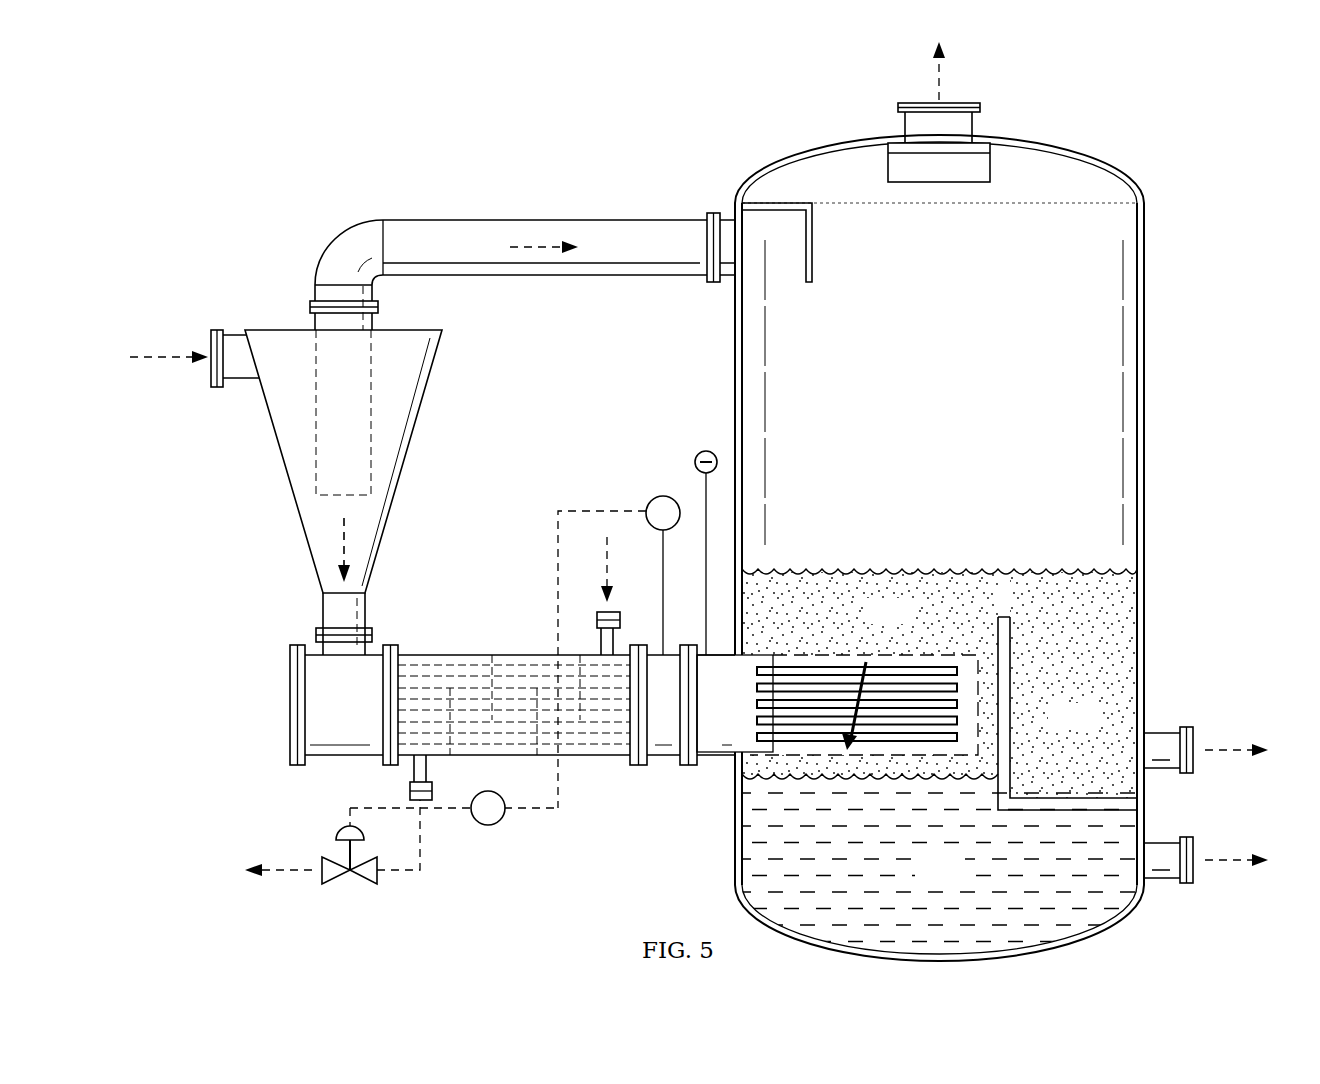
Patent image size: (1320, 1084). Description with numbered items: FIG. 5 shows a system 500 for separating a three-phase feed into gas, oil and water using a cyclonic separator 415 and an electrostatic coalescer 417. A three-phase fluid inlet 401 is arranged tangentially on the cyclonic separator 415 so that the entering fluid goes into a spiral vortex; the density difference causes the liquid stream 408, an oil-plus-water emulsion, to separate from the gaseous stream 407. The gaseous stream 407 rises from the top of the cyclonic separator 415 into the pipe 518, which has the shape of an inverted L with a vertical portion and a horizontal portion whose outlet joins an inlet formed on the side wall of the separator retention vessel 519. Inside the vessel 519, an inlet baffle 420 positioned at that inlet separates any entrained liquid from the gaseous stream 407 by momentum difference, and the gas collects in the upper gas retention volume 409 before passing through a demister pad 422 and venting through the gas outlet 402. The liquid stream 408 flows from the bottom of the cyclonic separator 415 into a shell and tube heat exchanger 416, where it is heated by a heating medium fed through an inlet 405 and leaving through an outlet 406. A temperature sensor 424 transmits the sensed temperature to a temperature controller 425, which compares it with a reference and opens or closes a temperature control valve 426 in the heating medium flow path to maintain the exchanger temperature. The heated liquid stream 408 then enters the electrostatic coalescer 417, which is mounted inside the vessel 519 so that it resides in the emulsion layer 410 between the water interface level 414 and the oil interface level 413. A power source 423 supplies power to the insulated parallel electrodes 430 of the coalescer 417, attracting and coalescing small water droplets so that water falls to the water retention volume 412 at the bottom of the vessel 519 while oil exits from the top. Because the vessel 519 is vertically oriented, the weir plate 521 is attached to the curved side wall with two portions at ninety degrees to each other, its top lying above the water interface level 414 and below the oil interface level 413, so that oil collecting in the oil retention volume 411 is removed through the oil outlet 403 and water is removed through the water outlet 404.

The system 500 is at (338, 110).
The 3-phase fluid inlet 401 is at (232, 330).
The gas outlet 402 is at (982, 126).
The oil outlet 403 is at (1163, 773).
The water outlet 404 is at (1163, 883).
The inlet 405 is at (595, 640).
The outlet 406 is at (412, 770).
The gaseous stream 407 is at (530, 220).
The liquid stream 408 is at (344, 545).
The gas space 409 is at (919, 412).
The emulsion layer 410 is at (868, 627).
The oil retention volume 411 is at (1052, 732).
The water retention volume 412 is at (918, 880).
The oil interface level 413 is at (1068, 570).
The water interface level 414 is at (755, 773).
The cyclonic separator 415 is at (280, 460).
The heat exchanger 416 is at (462, 655).
The electrostatic coalescer 417 is at (840, 648).
The inlet baffle 420 is at (815, 246).
The demister pad 422 is at (950, 182).
The power source 423 is at (696, 456).
The temperature sensor 424 is at (650, 500).
The temperature controller 425 is at (487, 826).
The temperature control valve 426 is at (340, 830).
The tube 430 is at (934, 655).
The pipe 518 is at (456, 220).
The separator retention vessel 519 is at (1152, 382).
The weir plate 521 is at (1012, 637).